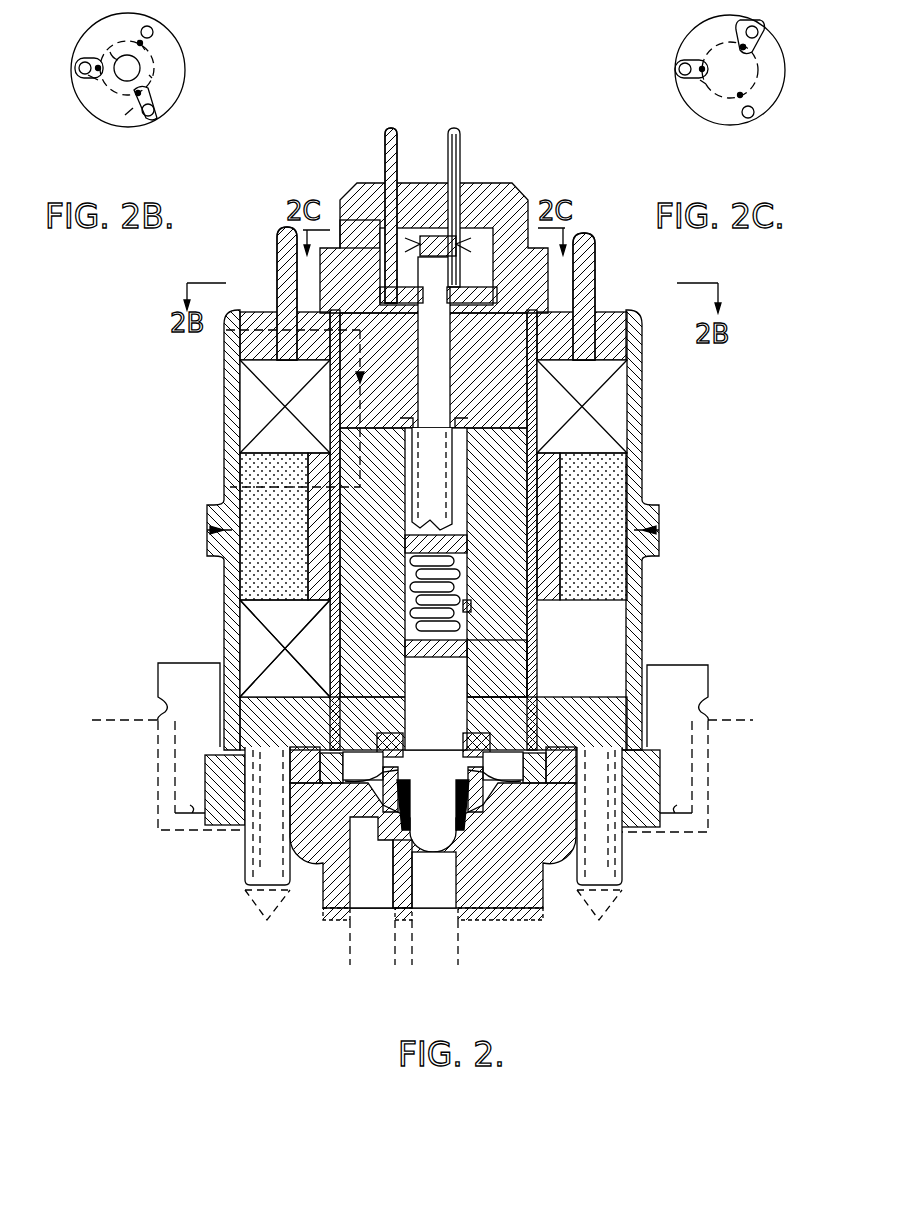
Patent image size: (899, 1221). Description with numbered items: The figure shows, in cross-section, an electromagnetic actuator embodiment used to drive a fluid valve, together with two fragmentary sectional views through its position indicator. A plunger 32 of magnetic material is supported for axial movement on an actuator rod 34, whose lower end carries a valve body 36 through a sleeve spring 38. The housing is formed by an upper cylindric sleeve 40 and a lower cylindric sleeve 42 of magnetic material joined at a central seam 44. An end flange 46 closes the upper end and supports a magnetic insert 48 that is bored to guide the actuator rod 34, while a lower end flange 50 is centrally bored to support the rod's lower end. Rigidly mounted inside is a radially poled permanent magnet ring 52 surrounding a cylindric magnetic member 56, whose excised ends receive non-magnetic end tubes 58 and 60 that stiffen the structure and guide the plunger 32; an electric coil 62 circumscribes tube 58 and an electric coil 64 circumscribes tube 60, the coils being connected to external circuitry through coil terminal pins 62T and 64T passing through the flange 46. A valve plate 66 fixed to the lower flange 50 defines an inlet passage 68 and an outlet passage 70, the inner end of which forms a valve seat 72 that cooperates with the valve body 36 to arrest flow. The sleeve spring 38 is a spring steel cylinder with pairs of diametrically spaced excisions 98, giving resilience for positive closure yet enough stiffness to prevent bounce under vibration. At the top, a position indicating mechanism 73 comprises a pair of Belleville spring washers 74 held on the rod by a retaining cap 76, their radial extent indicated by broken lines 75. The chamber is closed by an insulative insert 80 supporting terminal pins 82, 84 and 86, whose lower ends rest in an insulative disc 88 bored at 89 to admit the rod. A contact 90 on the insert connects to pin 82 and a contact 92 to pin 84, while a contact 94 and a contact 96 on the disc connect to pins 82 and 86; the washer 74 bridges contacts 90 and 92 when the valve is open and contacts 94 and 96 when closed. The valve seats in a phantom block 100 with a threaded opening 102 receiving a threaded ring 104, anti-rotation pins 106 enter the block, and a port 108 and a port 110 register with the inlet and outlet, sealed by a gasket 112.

In FIG. 2, the plunger 32 is at (496, 508).
In FIG. 2, the actuator rod 34 is at (442, 486).
In FIG. 2, the valve body 36 is at (442, 832).
In FIG. 2, the sleeve spring 38 is at (470, 608).
In FIG. 2, the upper cylindric sleeve 40 is at (640, 440).
In FIG. 2, the lower cylindric sleeve 42 is at (643, 608).
In FIG. 2, the central seam 44 is at (660, 530).
In FIG. 2, the end flange 46 is at (625, 312).
In FIG. 2, the magnetic insert 48 is at (500, 356).
In FIG. 2, the lower end flange 50 is at (504, 694).
In FIG. 2, the permanent magnet ring 52 is at (602, 541).
In FIG. 2, the cylindric magnetic member 56 is at (332, 529).
In FIG. 2, the non-magnetic end tube 58 is at (333, 410).
In FIG. 2, the non-magnetic end tube 60 is at (333, 650).
In FIG. 2, the electric coil 62 is at (590, 384).
In FIG. 2, the electric coil 64 is at (290, 694).
In FIG. 2, the coil terminal pin 62T is at (593, 238).
In FIG. 2, the coil terminal pin 64T is at (285, 232).
In FIG. 2, the valve plate 66 is at (543, 905).
In FIG. 2, the inlet passage 68 is at (350, 865).
In FIG. 2, the outlet passage 70 is at (413, 890).
In FIG. 2, the valve seat 72 is at (456, 860).
In FIG. 2, the position indicating mechanism 73 is at (486, 190).
In FIG. 2, the Belleville spring washers 74 is at (470, 250).
In FIG. 2B, the broken lines 75 is at (146, 73).
In FIG. 2, the retaining cap 76 is at (430, 236).
In FIG. 2, the insulative insert 80 is at (378, 182).
In FIG. 2, the terminal pin 82 is at (383, 135).
In FIG. 2B, the terminal pin 82 is at (73, 68).
In FIG. 2C, the terminal pin 82 is at (672, 70).
In FIG. 2, the terminal pin 84 is at (462, 140).
In FIG. 2B, the terminal pin 84 is at (152, 30).
In FIG. 2C, the terminal pin 84 is at (760, 22).
In FIG. 2B, the terminal pin 86 is at (152, 113).
In FIG. 2C, the terminal pin 86 is at (755, 112).
In FIG. 2, the insulative disc 88 is at (465, 286).
In FIG. 2B, the bore 89 is at (115, 58).
In FIG. 2C, the contact 90 is at (700, 80).
In FIG. 2C, the contact 92 is at (755, 48).
In FIG. 2, the contact 94 is at (403, 287).
In FIG. 2B, the contact 94 is at (90, 75).
In FIG. 2B, the contact 96 is at (133, 108).
In FIG. 2, the excisions 98 is at (442, 560).
In FIG. 2, the block 100 is at (720, 720).
In FIG. 2, the threaded opening 102 is at (705, 785).
In FIG. 2, the threaded ring 104 is at (707, 685).
In FIG. 2, the anti-rotation pins 106 is at (255, 860).
In FIG. 2, the port 108 is at (350, 950).
In FIG. 2, the port 110 is at (458, 960).
In FIG. 2, the gasket 112 is at (520, 922).